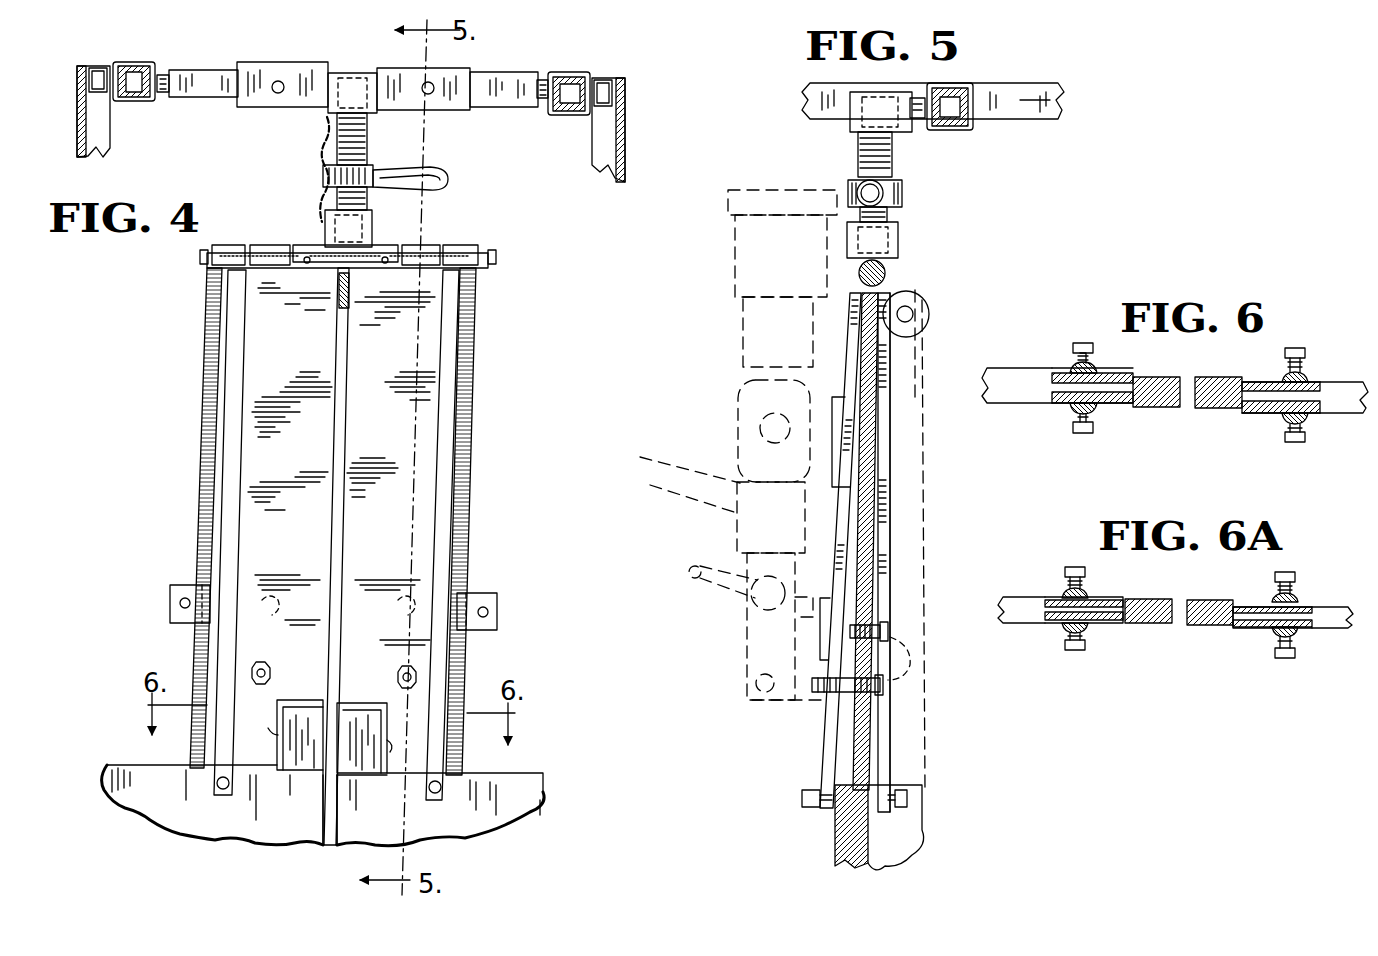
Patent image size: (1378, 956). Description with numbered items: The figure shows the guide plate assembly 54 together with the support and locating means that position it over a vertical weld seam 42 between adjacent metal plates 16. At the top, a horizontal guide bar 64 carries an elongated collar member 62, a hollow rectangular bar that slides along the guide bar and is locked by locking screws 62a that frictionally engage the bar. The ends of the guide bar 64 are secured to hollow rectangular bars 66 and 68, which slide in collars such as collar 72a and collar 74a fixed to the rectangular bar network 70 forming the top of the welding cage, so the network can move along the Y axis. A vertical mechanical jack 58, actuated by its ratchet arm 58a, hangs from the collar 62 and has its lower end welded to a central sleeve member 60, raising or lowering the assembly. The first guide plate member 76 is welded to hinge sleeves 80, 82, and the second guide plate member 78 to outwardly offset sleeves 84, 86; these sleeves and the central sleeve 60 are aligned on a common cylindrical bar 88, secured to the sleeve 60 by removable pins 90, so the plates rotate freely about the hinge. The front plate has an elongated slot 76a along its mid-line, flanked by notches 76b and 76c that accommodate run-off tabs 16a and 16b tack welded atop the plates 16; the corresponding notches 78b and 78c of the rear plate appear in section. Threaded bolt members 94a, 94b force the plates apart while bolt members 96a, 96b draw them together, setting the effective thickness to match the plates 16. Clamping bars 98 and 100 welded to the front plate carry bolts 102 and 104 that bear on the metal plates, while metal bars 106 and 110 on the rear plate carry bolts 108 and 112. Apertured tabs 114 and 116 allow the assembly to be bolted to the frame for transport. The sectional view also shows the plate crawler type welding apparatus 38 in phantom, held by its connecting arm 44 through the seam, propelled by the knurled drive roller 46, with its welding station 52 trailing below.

In FIG. 4, the metal plates 16 is at (125, 765).
In FIG. 5, the metal plates 16 is at (838, 845).
In FIG. 4, the run-off tab 16a is at (303, 720).
In FIG. 6, the run-off tab 16a is at (1163, 407).
In FIG. 6A, the run-off tab 16a is at (1140, 625).
In FIG. 4, the run-off tab 16b is at (362, 723).
In FIG. 6, the run-off tab 16b is at (1210, 408).
In FIG. 6A, the run-off tab 16b is at (1207, 627).
In FIG. 5, the plate crawler type welding apparatus 38 is at (740, 400).
In FIG. 4, the seam 42 is at (328, 845).
In FIG. 5, the connecting arm 44 is at (900, 358).
In FIG. 5, the knurled drive roller 46 is at (918, 300).
In FIG. 5, the welding station 52 is at (760, 640).
In FIG. 4, the guide plate assembly 54 is at (482, 322).
In FIG. 5, the guide plate assembly 54 is at (900, 338).
In FIG. 4, the mechanical jack 58 is at (362, 146).
In FIG. 5, the mechanical jack 58 is at (858, 145).
In FIG. 4, the ratchet arm 58a is at (445, 182).
In FIG. 5, the ratchet arm 58a is at (850, 190).
In FIG. 4, the sleeve member 60 is at (372, 247).
In FIG. 5, the sleeve member 60 is at (879, 175).
In FIG. 4, the collar member 62 is at (258, 62).
In FIG. 5, the collar member 62 is at (960, 85).
In FIG. 4, the locking screws 62a is at (422, 84).
In FIG. 5, the locking screws 62a is at (916, 118).
In FIG. 4, the guide bar 64 is at (508, 72).
In FIG. 5, the guide bar 64 is at (972, 120).
In FIG. 4, the hollow rectangular bar 66 is at (136, 97).
In FIG. 4, the hollow rectangular bar 68 is at (572, 115).
In FIG. 4, the rectangular bar network 70 is at (92, 66).
In FIG. 4, the collar 72a is at (162, 92).
In FIG. 5, the collar 72a is at (1030, 119).
In FIG. 4, the collar 74a is at (543, 98).
In FIG. 4, the first guide plate member 76 is at (262, 402).
In FIG. 5, the first guide plate member 76 is at (860, 345).
In FIG. 6, the first guide plate member 76 is at (1108, 403).
In FIG. 6A, the first guide plate member 76 is at (1050, 620).
In FIG. 4, the elongated slot 76a is at (346, 420).
In FIG. 4, the notch 76b is at (270, 730).
In FIG. 6, the notch 76b is at (1133, 403).
In FIG. 6A, the notch 76b is at (1123, 620).
In FIG. 4, the notch 76c is at (390, 750).
In FIG. 6, the notch 76c is at (1246, 413).
In FIG. 6A, the notch 76c is at (1237, 627).
In FIG. 6, the second guide plate member 78 is at (1052, 373).
In FIG. 6A, the second guide plate member 78 is at (1050, 600).
In FIG. 6, the notch 78b is at (1135, 380).
In FIG. 6A, the notch 78b is at (1123, 598).
In FIG. 6, the notch 78c is at (1244, 407).
In FIG. 6A, the notch 78c is at (1237, 623).
In FIG. 4, the sleeve 80 is at (270, 245).
In FIG. 4, the sleeve 82 is at (420, 245).
In FIG. 5, the sleeve 82 is at (886, 275).
In FIG. 4, the sleeve 84 is at (462, 245).
In FIG. 4, the sleeve 86 is at (230, 245).
In FIG. 4, the cylindrical bar 88 is at (205, 258).
In FIG. 5, the cylindrical bar 88 is at (860, 275).
In FIG. 4, the removable pins 90 is at (305, 264).
In FIG. 4, the threaded bolt member 94a is at (268, 596).
In FIG. 4, the threaded bolt member 94b is at (400, 596).
In FIG. 5, the threaded bolt member 94b is at (908, 660).
In FIG. 4, the bolt member 96a is at (252, 670).
In FIG. 4, the bolt member 96b is at (416, 678).
In FIG. 5, the bolt member 96b is at (885, 690).
In FIG. 4, the clamping bar 98 is at (230, 452).
In FIG. 5, the clamping bar 98 is at (838, 533).
In FIG. 6, the clamping bar 98 is at (1072, 408).
In FIG. 6A, the clamping bar 98 is at (1062, 630).
In FIG. 4, the clamping bar 100 is at (452, 375).
In FIG. 5, the clamping bar 100 is at (890, 392).
In FIG. 6, the clamping bar 100 is at (1308, 420).
In FIG. 6A, the clamping bar 100 is at (1292, 637).
In FIG. 4, the bolt 102 is at (218, 790).
In FIG. 5, the bolt 102 is at (812, 808).
In FIG. 6, the bolt 102 is at (1080, 433).
In FIG. 6A, the bolt 102 is at (1072, 650).
In FIG. 4, the bolt 104 is at (441, 790).
In FIG. 6, the bolt 104 is at (1296, 442).
In FIG. 6A, the bolt 104 is at (1283, 658).
In FIG. 5, the metal bar 106 is at (880, 458).
In FIG. 6, the metal bar 106 is at (1097, 370).
In FIG. 6A, the metal bar 106 is at (1088, 593).
In FIG. 5, the bolt 108 is at (905, 808).
In FIG. 6, the bolt 108 is at (1080, 343).
In FIG. 6A, the bolt 108 is at (1070, 567).
In FIG. 6, the metal bar 110 is at (1308, 375).
In FIG. 6A, the metal bar 110 is at (1295, 596).
In FIG. 6, the bolt 112 is at (1295, 348).
In FIG. 6A, the bolt 112 is at (1288, 572).
In FIG. 4, the apertured tab 114 is at (182, 585).
In FIG. 4, the apertured tab 116 is at (497, 598).